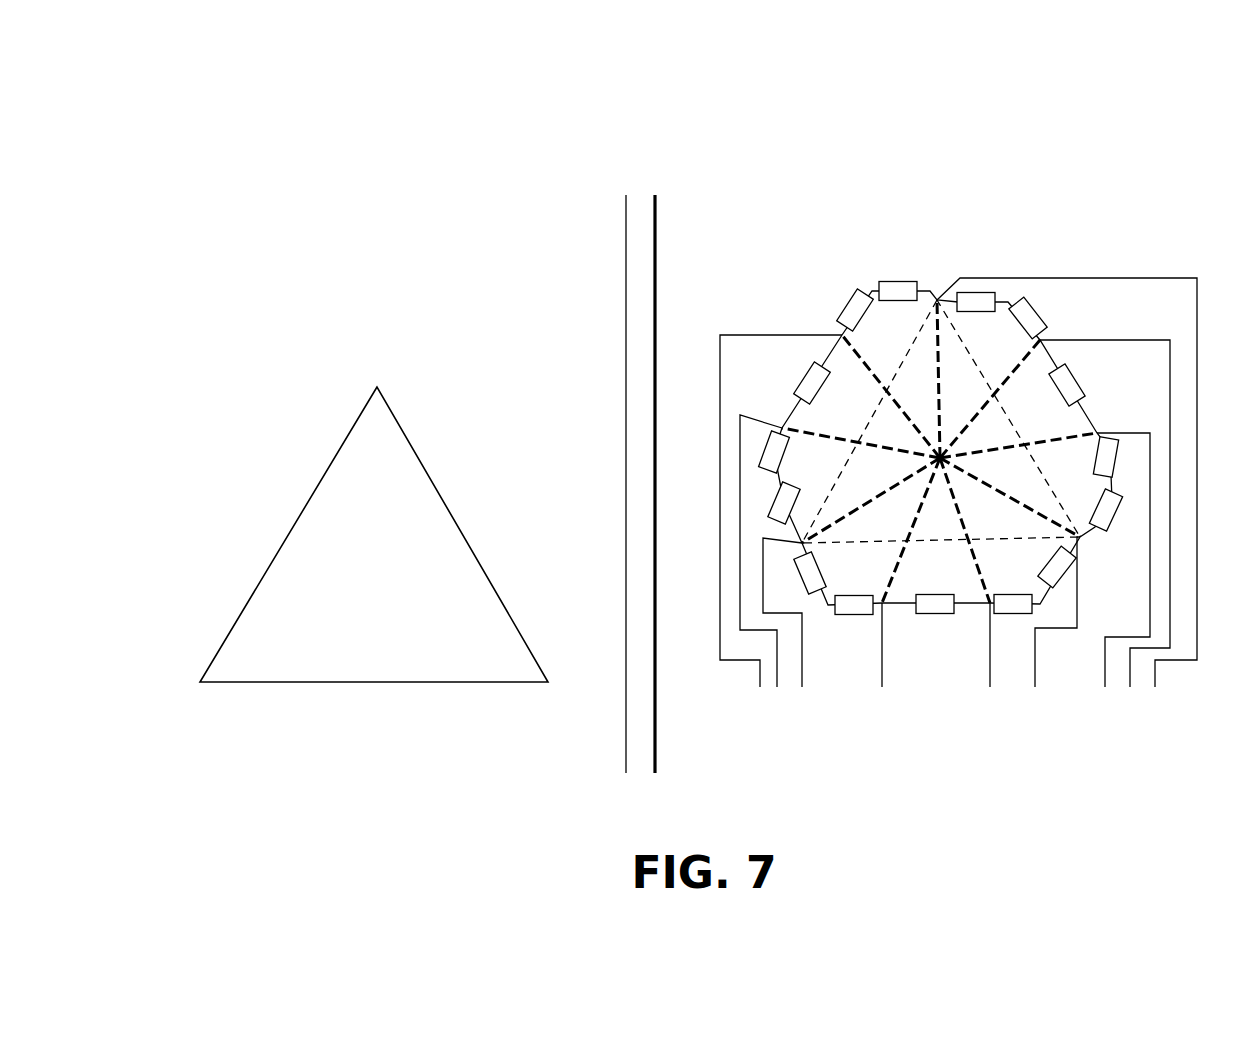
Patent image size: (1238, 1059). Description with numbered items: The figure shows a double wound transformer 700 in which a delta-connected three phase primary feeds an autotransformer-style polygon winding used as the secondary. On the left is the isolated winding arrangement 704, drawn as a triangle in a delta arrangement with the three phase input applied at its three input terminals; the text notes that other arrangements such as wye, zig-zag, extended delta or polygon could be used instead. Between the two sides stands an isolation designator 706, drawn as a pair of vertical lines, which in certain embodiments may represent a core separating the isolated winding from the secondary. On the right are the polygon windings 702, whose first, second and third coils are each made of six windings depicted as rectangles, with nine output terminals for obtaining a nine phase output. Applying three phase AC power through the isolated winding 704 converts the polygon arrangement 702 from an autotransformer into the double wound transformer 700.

The double wound transformer 700 is at (181, 68).
The polygon windings 702 is at (958, 436).
The isolated winding arrangement 704 is at (373, 462).
The isolation designator 706 is at (605, 453).